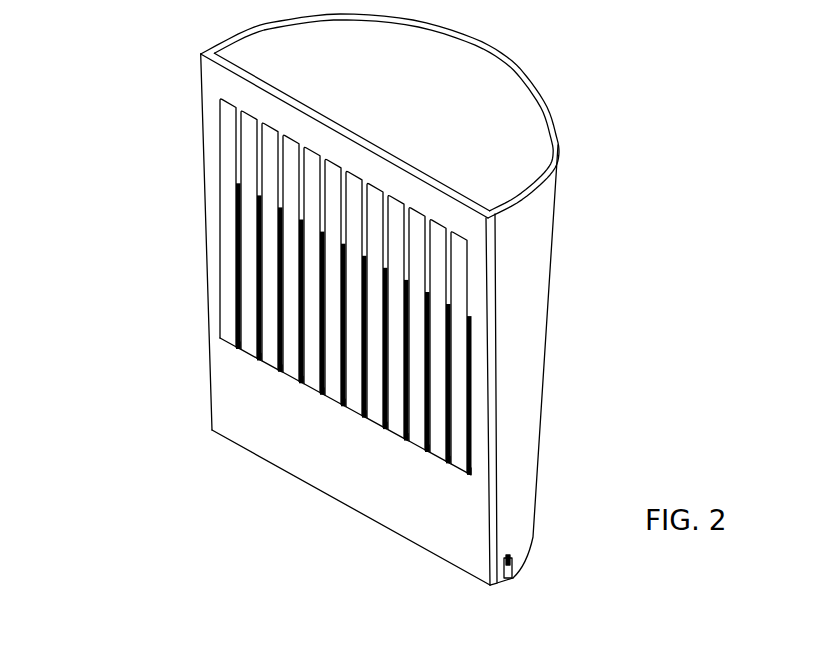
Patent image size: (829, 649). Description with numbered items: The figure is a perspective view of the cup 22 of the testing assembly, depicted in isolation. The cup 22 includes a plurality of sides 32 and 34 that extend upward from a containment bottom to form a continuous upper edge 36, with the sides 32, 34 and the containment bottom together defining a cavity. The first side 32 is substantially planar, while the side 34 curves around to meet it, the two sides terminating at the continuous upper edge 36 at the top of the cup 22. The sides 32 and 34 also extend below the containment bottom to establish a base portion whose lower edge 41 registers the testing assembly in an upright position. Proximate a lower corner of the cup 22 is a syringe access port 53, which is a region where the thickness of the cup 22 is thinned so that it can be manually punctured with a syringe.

The cup 22 is at (126, 53).
The first side 32 is at (265, 432).
The side 34 is at (545, 370).
The continuous upper edge 36 is at (517, 60).
The lower edge 41 is at (438, 557).
The syringe access port 53 is at (513, 578).